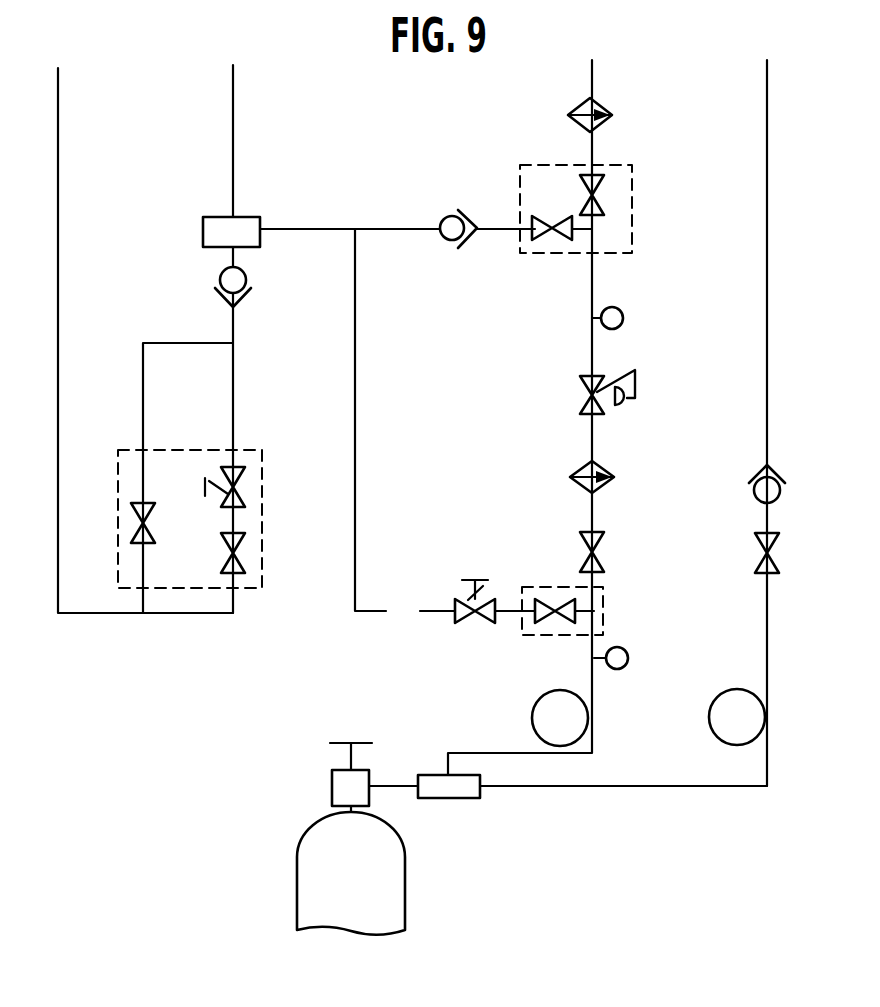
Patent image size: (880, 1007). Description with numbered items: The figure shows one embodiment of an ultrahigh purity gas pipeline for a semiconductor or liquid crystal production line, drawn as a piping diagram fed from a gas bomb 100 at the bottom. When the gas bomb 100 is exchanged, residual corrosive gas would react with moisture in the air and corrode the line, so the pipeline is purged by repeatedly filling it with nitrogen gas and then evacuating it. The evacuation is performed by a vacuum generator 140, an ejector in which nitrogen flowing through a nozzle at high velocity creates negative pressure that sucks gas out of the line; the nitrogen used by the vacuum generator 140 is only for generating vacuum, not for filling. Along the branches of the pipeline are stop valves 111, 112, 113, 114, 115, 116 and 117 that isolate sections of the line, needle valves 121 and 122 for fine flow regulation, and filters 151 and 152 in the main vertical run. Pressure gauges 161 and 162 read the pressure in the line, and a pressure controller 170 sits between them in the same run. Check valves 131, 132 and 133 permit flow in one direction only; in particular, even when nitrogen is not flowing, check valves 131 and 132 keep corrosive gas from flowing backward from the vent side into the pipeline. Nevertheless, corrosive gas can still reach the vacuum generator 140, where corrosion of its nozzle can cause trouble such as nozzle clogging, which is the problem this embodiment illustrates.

The gas bomb 100 is at (440, 895).
The stop valve 111 is at (137, 530).
The stop valve 112 is at (243, 556).
The stop valve 113 is at (550, 625).
The stop valve 114 is at (600, 548).
The stop valve 115 is at (548, 240).
The stop valve 116 is at (600, 190).
The stop valve 117 is at (760, 552).
The needle valve 121 is at (243, 487).
The needle valve 122 is at (475, 580).
The check valve 131 is at (247, 292).
The check valve 132 is at (452, 240).
The check valve 133 is at (760, 482).
The vacuum generator 140 is at (243, 217).
The filter 151 is at (613, 480).
The filter 152 is at (608, 118).
The pressure gauge 161 is at (626, 665).
The pressure gauge 162 is at (621, 312).
The pressure controller 170 is at (636, 388).